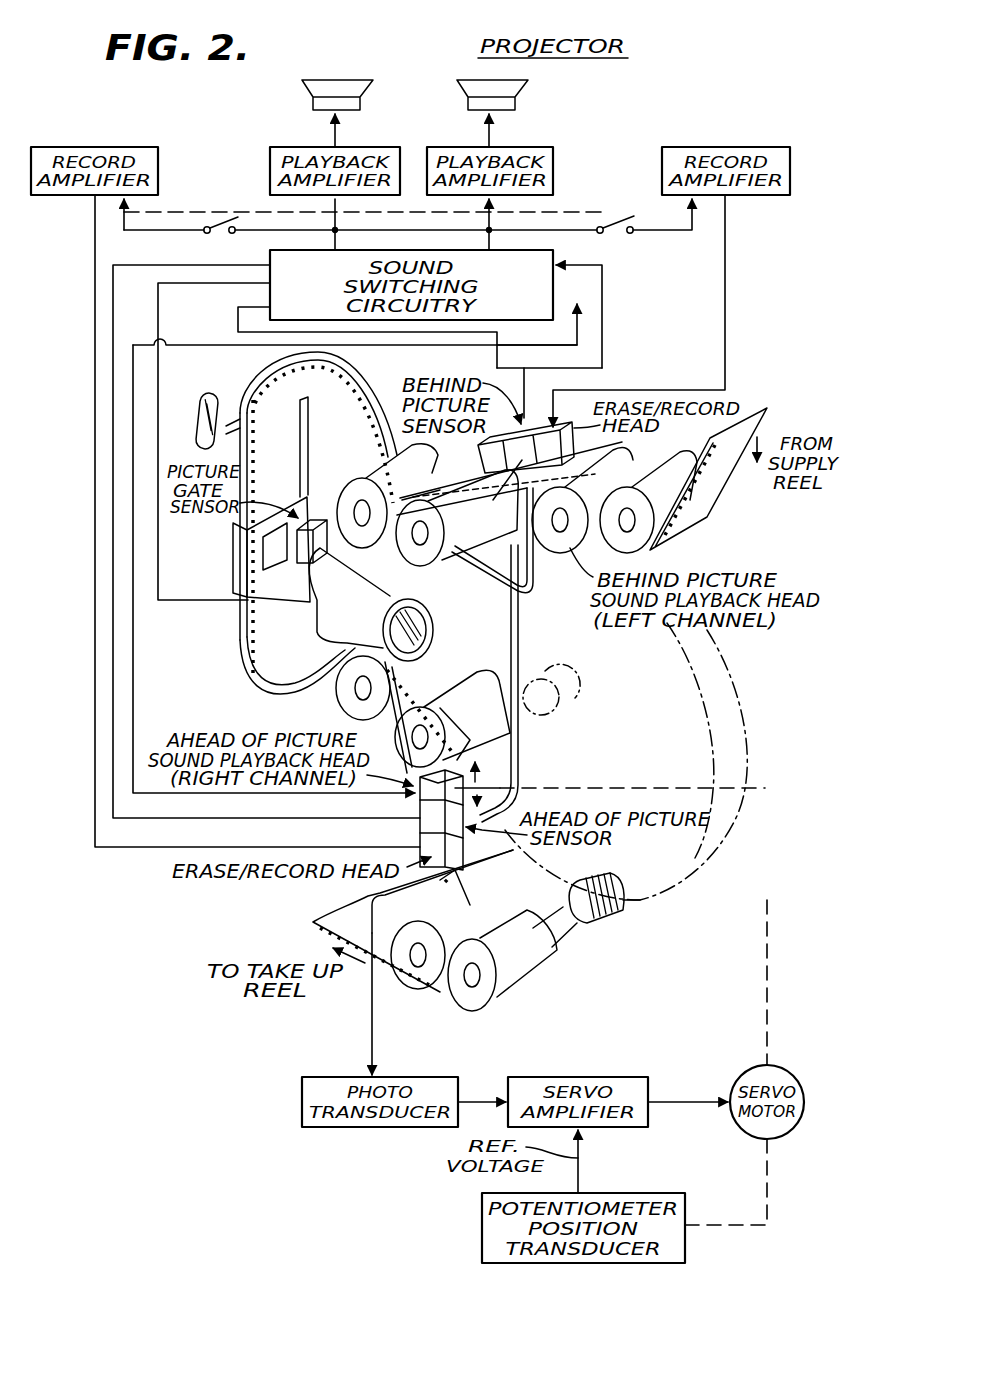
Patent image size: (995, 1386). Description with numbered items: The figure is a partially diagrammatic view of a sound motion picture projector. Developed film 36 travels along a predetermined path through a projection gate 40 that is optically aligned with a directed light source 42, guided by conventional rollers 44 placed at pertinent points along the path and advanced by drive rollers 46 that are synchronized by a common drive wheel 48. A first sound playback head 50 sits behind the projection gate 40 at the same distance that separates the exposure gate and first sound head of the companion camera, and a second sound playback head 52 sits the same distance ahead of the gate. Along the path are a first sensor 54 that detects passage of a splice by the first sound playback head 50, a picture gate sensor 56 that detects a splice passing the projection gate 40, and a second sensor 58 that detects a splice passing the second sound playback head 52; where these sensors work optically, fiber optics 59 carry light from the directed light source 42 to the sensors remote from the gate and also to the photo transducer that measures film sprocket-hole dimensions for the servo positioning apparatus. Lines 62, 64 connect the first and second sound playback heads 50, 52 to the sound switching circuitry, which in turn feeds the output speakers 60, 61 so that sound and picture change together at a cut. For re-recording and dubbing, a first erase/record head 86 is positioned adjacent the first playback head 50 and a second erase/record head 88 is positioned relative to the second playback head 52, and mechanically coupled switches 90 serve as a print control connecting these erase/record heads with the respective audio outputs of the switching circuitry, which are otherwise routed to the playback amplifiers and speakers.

The developed film 36 is at (354, 402).
The projection gate 40 is at (257, 556).
The directed light source 42 is at (196, 410).
The rollers 44 is at (468, 537).
The drive rollers 46 is at (372, 463).
The common drive wheel 48 is at (722, 690).
The first sound playback head 50 is at (570, 450).
The second sound playback head 52 is at (453, 760).
The first sensor 54 is at (491, 496).
The picture gate sensor 56 is at (320, 552).
The second sensor 58 is at (430, 812).
The fiber optics 59 is at (520, 613).
The output speaker 60 is at (315, 106).
The output speaker 61 is at (512, 100).
The line 62 is at (603, 300).
The line 64 is at (578, 336).
The first erase/record head 86 is at (487, 457).
The second erase/record head 88 is at (433, 840).
The mechanically coupled switches 90 is at (212, 230).